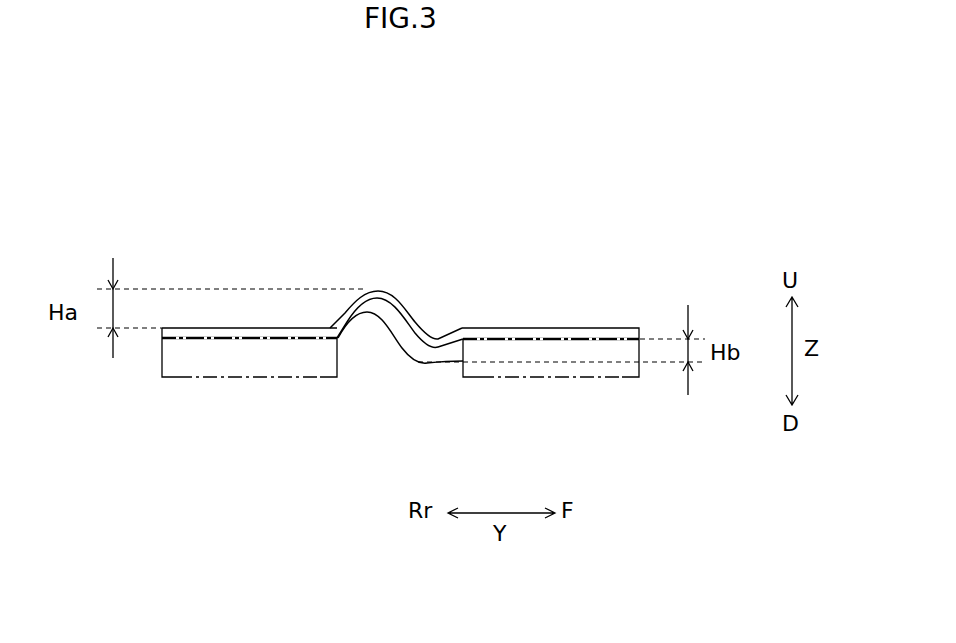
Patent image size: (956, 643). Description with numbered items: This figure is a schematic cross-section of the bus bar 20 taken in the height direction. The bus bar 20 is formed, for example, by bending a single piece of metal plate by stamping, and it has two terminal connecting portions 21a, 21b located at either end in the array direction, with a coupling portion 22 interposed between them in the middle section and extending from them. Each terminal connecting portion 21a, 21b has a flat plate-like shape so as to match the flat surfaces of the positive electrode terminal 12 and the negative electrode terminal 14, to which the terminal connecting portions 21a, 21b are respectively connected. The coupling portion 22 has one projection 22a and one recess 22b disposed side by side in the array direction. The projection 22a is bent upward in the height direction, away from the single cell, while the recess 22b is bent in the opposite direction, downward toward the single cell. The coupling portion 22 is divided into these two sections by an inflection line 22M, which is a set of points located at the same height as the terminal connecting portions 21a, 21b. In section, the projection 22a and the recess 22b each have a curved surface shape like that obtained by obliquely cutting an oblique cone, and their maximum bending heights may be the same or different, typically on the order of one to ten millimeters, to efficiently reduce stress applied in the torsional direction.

The bus bar 20 is at (266, 176).
The positive electrode terminal 12 is at (585, 372).
The negative electrode terminal 14 is at (178, 372).
The terminal connecting portion 21a is at (544, 329).
The terminal connecting portion 21b is at (237, 333).
The coupling portion 22 is at (510, 198).
The projection 22a is at (383, 288).
The recess 22b is at (437, 336).
The inflection line 22M is at (395, 320).